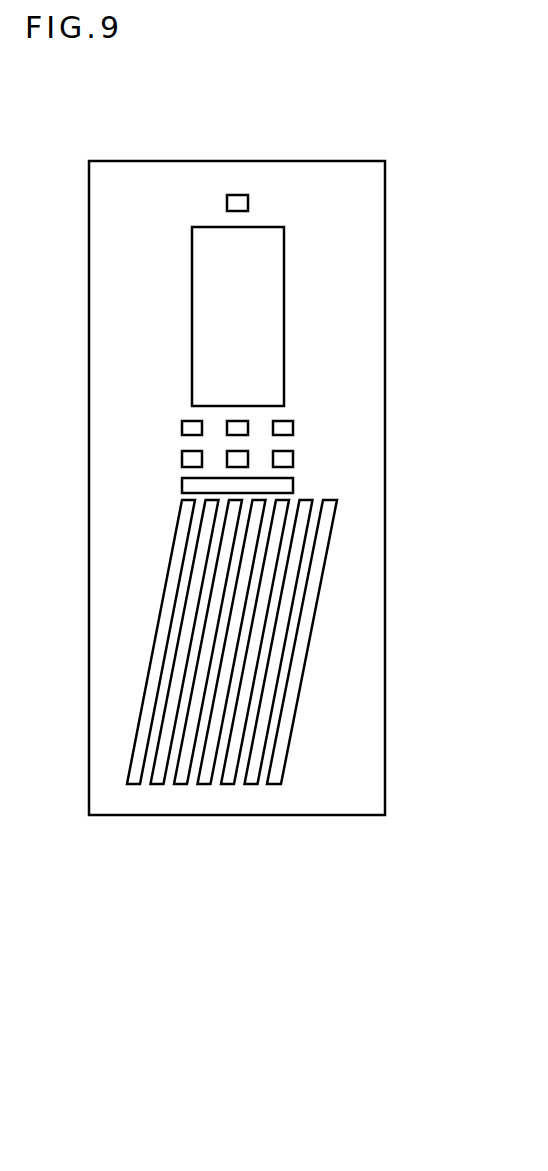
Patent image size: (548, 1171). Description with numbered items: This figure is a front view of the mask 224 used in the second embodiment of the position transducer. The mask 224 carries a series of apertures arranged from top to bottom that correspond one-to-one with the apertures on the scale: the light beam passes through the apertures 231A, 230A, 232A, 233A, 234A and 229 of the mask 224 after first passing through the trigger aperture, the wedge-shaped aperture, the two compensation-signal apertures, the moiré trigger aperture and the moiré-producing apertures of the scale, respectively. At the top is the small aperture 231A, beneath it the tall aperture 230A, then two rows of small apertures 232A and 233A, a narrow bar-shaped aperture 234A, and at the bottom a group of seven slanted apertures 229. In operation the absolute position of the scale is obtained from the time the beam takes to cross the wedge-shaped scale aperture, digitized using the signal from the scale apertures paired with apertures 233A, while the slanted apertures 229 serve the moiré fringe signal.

The mask 224 is at (372, 182).
The aperture 231A is at (247, 207).
The aperture 230A is at (273, 331).
The apertures 232A is at (293, 428).
The apertures 233A is at (293, 458).
The aperture 234A is at (293, 486).
The apertures 229 is at (297, 652).